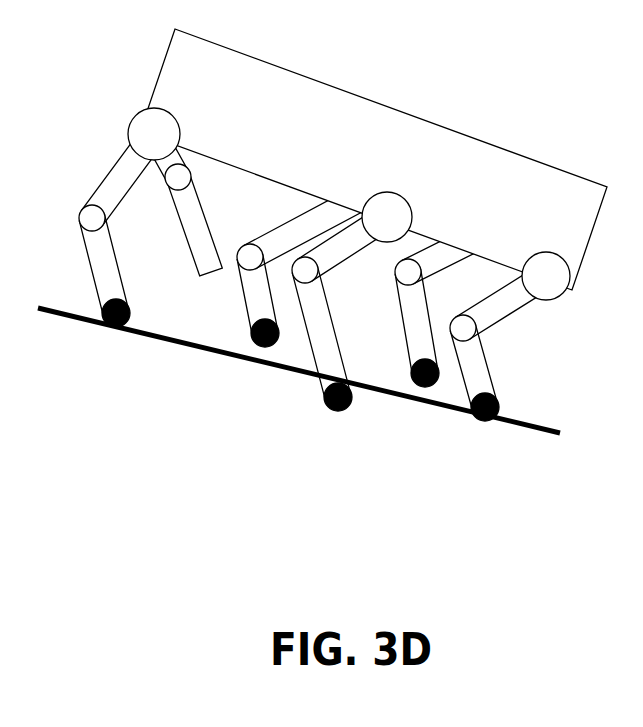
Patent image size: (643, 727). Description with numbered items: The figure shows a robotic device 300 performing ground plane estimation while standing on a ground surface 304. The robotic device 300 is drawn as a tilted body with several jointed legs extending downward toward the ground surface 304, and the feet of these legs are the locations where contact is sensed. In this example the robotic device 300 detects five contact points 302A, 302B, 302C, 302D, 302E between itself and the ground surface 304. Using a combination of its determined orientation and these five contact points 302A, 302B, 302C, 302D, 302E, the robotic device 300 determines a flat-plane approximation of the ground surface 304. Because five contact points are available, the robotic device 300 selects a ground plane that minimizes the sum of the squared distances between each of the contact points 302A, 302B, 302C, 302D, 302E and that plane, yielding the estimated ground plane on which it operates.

The robotic device 300 is at (452, 61).
The contact point 302A is at (108, 322).
The contact point 302B is at (258, 346).
The contact point 302C is at (330, 407).
The contact point 302D is at (420, 387).
The contact point 302E is at (480, 418).
The ground surface 304 is at (528, 421).